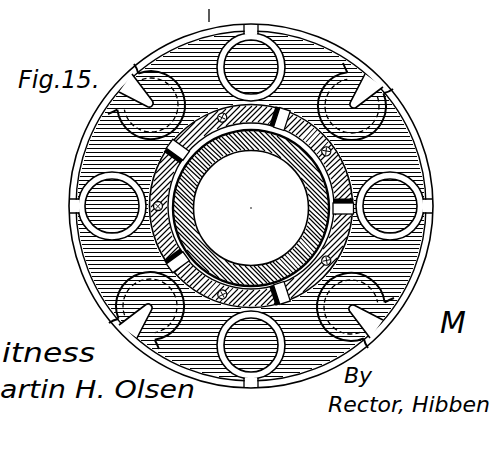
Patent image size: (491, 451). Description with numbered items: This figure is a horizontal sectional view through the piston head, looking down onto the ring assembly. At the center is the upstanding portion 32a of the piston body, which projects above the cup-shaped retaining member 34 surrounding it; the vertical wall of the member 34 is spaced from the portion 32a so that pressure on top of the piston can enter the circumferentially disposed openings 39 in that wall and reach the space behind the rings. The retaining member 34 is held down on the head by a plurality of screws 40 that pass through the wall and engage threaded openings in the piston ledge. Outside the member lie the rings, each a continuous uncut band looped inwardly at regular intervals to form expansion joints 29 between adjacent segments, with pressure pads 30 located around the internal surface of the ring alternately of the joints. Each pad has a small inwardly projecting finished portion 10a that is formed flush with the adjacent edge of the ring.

The inwardly projecting portion 10a is at (356, 101).
The expansion joint 29 is at (385, 168).
The pressure pad 30 is at (322, 99).
The upstanding portion 32a is at (193, 190).
The cup-shaped retaining member 34 is at (251, 109).
The opening 39 is at (336, 199).
The screw 40 is at (324, 154).